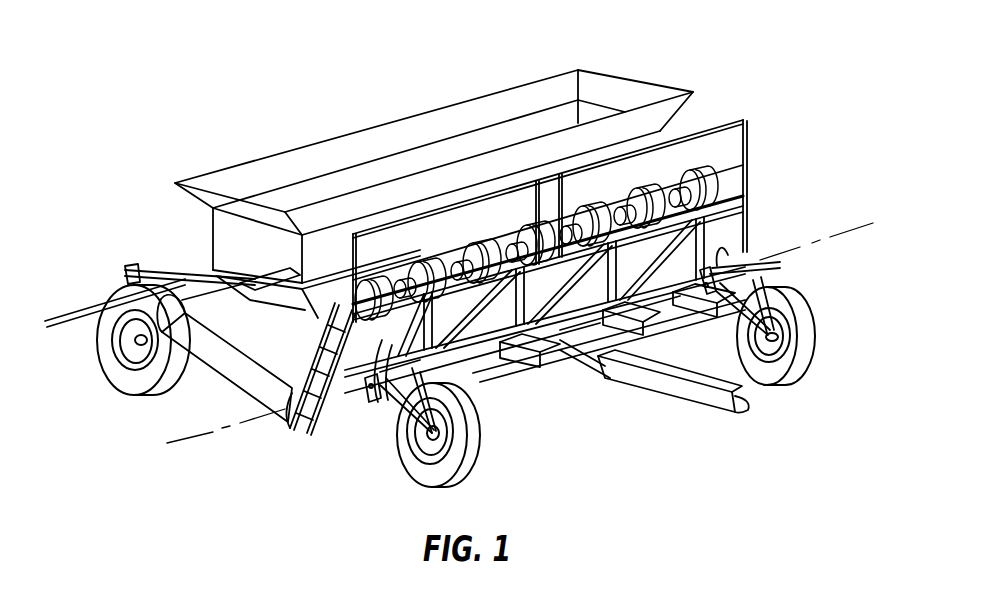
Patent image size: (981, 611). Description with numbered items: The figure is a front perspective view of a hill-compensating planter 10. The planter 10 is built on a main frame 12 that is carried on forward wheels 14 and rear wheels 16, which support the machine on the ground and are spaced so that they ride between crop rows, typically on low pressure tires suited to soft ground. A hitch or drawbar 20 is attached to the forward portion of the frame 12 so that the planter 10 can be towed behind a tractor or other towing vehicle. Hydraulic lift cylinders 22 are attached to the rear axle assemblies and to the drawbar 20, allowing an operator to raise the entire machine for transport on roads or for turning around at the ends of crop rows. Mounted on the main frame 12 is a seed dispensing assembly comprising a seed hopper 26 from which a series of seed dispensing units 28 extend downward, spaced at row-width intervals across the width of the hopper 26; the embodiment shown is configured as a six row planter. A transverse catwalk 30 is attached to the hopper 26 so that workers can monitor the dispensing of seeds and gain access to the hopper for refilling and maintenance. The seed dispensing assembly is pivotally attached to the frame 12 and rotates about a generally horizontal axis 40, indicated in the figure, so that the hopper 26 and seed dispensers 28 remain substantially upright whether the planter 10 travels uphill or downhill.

The hill-compensating planter 10 is at (214, 78).
The main frame 12 is at (230, 352).
The forward wheels 14 is at (420, 468).
The rear wheels 16 is at (115, 365).
The drawbar 20 is at (685, 387).
The hydraulic lift cylinders 22 is at (376, 402).
The seed hopper 26 is at (310, 163).
The seed dispensing units 28 is at (371, 298).
The transverse catwalk 30 is at (727, 200).
The generally horizontal axis 40 is at (200, 437).